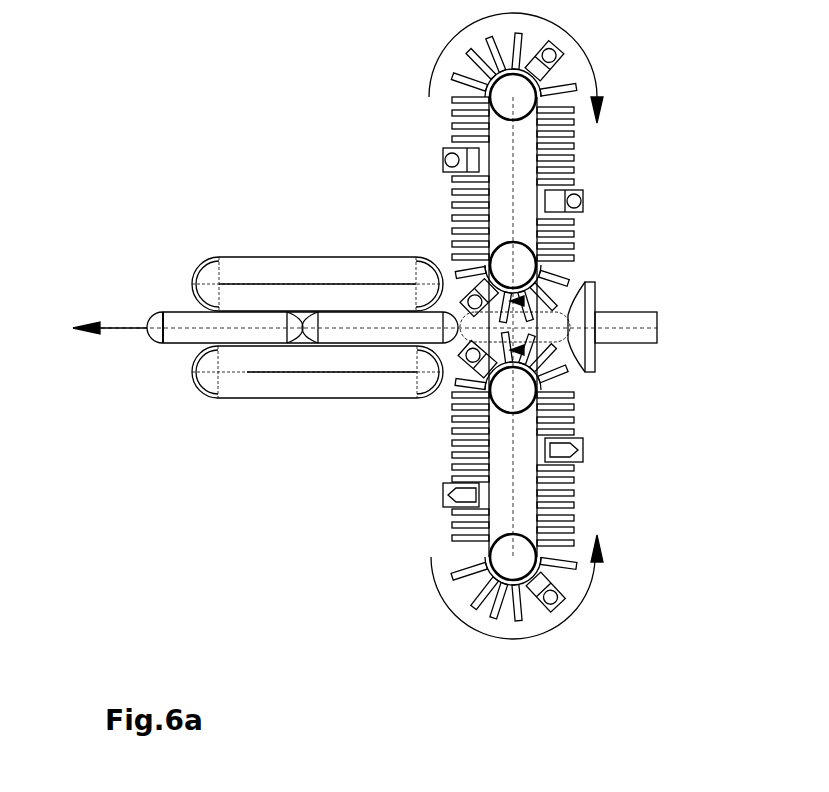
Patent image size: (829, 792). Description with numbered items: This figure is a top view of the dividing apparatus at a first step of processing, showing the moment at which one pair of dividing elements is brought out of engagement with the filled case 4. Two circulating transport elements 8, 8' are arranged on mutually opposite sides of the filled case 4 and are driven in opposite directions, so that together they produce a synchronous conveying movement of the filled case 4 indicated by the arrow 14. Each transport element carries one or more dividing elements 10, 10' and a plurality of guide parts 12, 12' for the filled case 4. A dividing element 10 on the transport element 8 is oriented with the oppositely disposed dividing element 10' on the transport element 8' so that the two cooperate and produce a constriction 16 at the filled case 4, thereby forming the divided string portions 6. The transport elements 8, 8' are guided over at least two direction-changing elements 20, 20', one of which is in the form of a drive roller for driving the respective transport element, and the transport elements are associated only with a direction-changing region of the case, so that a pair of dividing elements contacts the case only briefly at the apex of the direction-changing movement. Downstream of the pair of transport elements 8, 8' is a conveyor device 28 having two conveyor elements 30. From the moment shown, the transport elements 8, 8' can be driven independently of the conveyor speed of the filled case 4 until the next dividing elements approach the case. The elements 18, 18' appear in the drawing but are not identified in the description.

The filled case 4 is at (553, 327).
The divided string portion 6 is at (180, 322).
The transport element 8 is at (455, 515).
The transport element 8' is at (461, 136).
The dividing element 10 is at (406, 481).
The dividing element 10' is at (398, 148).
The guide part 12 is at (605, 469).
The guide part 12' is at (603, 184).
The arrow 14 is at (117, 330).
The constriction 16 is at (303, 313).
The deflecting element 18 is at (602, 389).
The deflecting element 18' is at (608, 280).
The direction-changing element 20 is at (551, 405).
The direction-changing element 20' is at (560, 264).
The conveyor device 28 is at (269, 383).
The conveyor element 30 is at (243, 400).